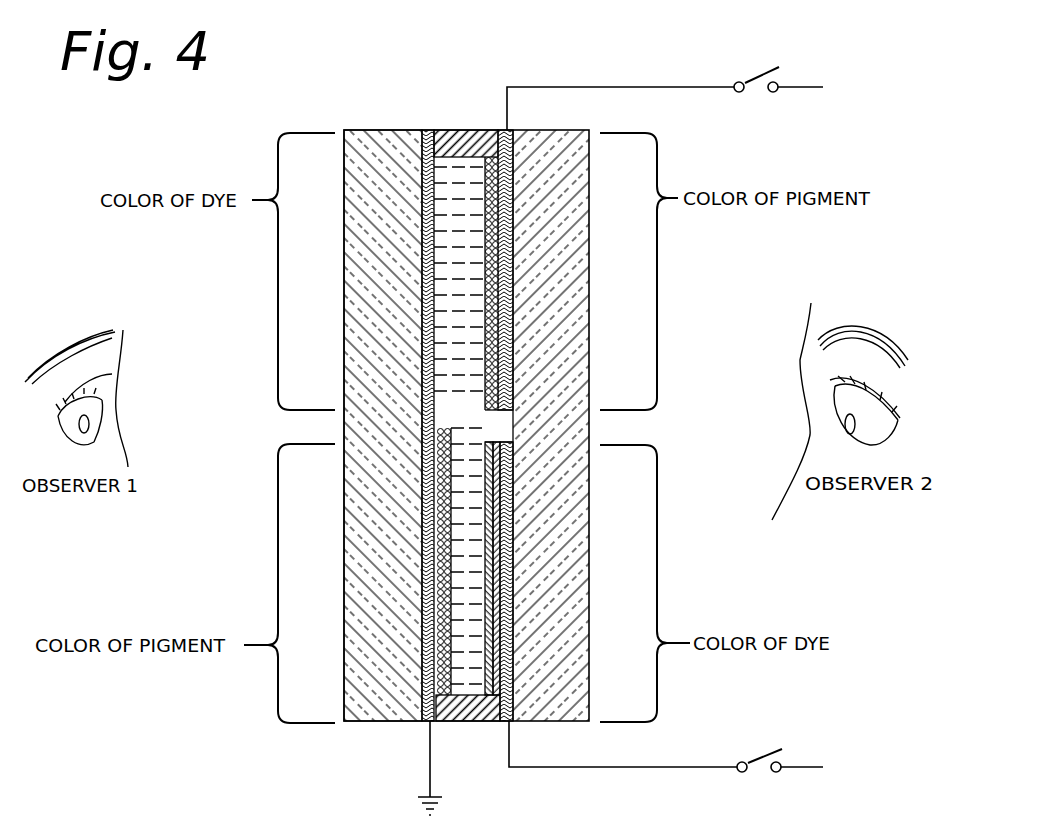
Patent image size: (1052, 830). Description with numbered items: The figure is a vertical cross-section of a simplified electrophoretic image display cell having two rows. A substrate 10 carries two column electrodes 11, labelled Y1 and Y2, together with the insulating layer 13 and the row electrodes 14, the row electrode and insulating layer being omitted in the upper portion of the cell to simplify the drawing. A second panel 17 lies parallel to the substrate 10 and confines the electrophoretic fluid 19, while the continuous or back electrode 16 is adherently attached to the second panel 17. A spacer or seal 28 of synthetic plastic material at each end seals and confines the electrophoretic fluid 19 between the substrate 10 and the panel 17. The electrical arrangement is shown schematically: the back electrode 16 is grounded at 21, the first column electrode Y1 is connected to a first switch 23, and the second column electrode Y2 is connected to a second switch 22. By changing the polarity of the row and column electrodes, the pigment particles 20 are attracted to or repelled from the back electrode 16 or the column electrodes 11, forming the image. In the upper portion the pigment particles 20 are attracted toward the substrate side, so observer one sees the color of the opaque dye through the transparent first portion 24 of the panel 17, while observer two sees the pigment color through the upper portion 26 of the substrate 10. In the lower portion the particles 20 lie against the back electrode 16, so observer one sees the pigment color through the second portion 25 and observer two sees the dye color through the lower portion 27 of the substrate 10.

The substrate 10 is at (489, 425).
The column electrodes 11 is at (510, 232).
The insulating layer 13 is at (500, 532).
The row electrodes 14 is at (487, 494).
The continuous or back electrode 16 is at (425, 130).
The second panel 17 is at (370, 716).
The electrophoretic fluid 19 is at (448, 200).
The pigment particles 20 is at (478, 253).
The ground 21 is at (430, 762).
The second switch 22 is at (762, 771).
The first switch 23 is at (752, 75).
The transparent first portion 24 is at (278, 231).
The second portion 25 is at (278, 684).
The upper portion 26 is at (657, 226).
The lower portion 27 is at (657, 669).
The spacer or seal 28 is at (466, 130).
The first column electrode Y1 is at (517, 303).
The second column electrode Y2 is at (520, 580).